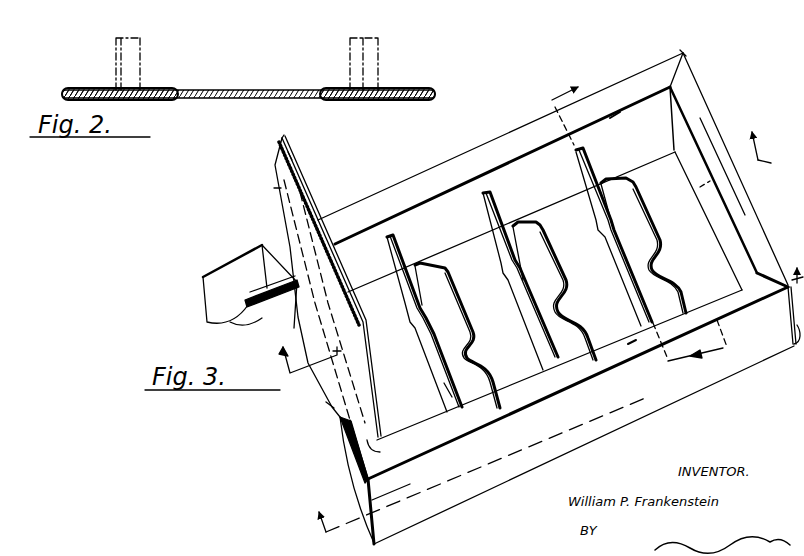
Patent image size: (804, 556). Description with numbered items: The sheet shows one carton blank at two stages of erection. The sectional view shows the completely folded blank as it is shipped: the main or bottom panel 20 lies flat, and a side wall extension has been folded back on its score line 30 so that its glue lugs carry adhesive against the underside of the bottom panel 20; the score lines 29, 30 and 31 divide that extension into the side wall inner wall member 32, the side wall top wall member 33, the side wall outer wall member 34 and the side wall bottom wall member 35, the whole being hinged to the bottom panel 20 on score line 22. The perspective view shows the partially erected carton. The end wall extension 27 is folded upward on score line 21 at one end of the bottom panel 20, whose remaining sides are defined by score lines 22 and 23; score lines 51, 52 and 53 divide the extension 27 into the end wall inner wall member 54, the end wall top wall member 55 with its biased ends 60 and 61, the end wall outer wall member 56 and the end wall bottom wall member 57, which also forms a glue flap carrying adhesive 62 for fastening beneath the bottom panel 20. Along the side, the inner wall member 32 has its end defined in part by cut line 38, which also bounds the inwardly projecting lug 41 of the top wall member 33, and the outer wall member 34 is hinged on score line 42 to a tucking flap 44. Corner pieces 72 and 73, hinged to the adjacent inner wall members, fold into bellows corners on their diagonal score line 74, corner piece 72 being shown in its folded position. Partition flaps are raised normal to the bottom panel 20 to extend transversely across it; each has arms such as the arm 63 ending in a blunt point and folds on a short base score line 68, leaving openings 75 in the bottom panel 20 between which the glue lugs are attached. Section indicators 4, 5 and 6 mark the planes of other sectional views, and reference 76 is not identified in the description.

In FIG. 3, the section line 4- 4 is at (632, 232).
In FIG. 3, the section line 5- 5 is at (531, 262).
In FIG. 3, the section line 6- 6 is at (557, 399).
In FIG. 2, the main or bottom panel 20 is at (265, 90).
In FIG. 3, the main or bottom panel 20 is at (584, 255).
In FIG. 3, the score or fold line 21 is at (334, 407).
In FIG. 3, the score or fold line 22 is at (552, 200).
In FIG. 3, the score or fold line 23 is at (730, 270).
In FIG. 3, the end wall extension 27 is at (318, 196).
In FIG. 3, the score or fold line 29 is at (514, 174).
In FIG. 2, the score or fold line 30 is at (62, 90).
In FIG. 3, the score or fold line 30 is at (501, 146).
In FIG. 2, the score or fold line 31 is at (84, 100).
In FIG. 3, the score or fold line 31 is at (773, 360).
In FIG. 2, the side wall inner wall member panel 32 is at (130, 88).
In FIG. 3, the side wall inner wall member panel 32 is at (614, 115).
In FIG. 2, the side wall top wall member panel 33 is at (128, 38).
In FIG. 3, the side wall top wall member panel 33 is at (445, 176).
In FIG. 2, the side wall outer wall member panel 34 is at (116, 62).
In FIG. 3, the side wall outer wall member panel 34 is at (634, 352).
In FIG. 2, the side wall bottom wall member panel 35 is at (145, 100).
In FIG. 3, the cut line 38 is at (382, 450).
In FIG. 3, the inwardly projecting lug 41 is at (212, 298).
In FIG. 3, the score or fold line 42 is at (372, 502).
In FIG. 3, the tucking flap 44 is at (360, 485).
In FIG. 3, the score or fold line 51 is at (745, 250).
In FIG. 3, the score or fold line 52 is at (750, 203).
In FIG. 3, the score or fold line 53 is at (277, 188).
In FIG. 3, the end wall inner wall member panel 54 is at (307, 342).
In FIG. 3, the end wall top wall member panel 55 is at (705, 118).
In FIG. 3, the end wall outer wall member panel 56 is at (797, 348).
In FIG. 3, the end wall bottom wall member panel 57 is at (287, 160).
In FIG. 3, the biased end 60 is at (674, 78).
In FIG. 3, the biased end 61 is at (772, 285).
In FIG. 3, the adhesive 62 is at (283, 142).
In FIG. 3, the arm 63 is at (399, 273).
In FIG. 3, the score or fold line 68 is at (438, 374).
In FIG. 3, the corner piece 72 is at (272, 291).
In FIG. 3, the corner piece 73 is at (343, 418).
In FIG. 3, the diagonal fold or score line 74 is at (280, 323).
In FIG. 3, the opening 75 is at (456, 298).
In FIG. 3, the divider top 76 is at (388, 250).